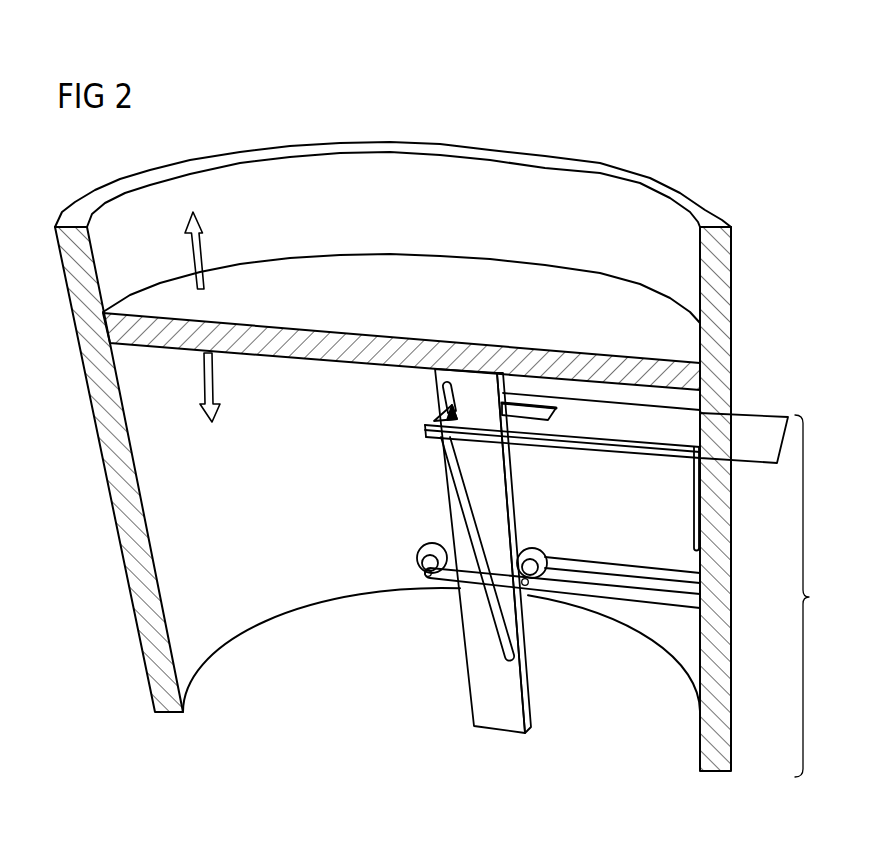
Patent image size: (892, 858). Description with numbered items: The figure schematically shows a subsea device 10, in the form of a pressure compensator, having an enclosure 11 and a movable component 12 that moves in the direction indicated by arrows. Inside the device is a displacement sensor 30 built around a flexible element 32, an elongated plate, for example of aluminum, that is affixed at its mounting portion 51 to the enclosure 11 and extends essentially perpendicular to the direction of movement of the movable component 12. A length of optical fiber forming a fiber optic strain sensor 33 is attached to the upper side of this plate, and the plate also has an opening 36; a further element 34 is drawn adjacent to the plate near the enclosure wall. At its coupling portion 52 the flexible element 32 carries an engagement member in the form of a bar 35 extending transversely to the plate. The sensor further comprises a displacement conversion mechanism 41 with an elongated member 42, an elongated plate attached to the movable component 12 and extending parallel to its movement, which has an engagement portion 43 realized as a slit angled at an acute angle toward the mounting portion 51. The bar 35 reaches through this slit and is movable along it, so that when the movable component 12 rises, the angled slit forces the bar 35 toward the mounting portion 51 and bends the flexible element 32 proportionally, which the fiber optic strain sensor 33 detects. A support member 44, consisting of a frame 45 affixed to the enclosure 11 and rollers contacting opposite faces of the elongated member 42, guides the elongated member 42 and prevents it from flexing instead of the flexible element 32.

The subsea device 10 is at (688, 144).
The enclosure 11 is at (122, 511).
The movable component 12 is at (299, 339).
The displacement sensor 30 is at (606, 549).
The flexible element 32 is at (652, 420).
The fiber optic strain sensor 33 is at (603, 453).
The guide pin 34 is at (693, 528).
The bar 35 is at (441, 395).
The opening 36 is at (521, 416).
The displacement conversion mechanism 41 is at (432, 733).
The elongated member 42 is at (466, 637).
The engagement portion 43 is at (512, 638).
The support member 44 is at (408, 530).
The frame 45 is at (621, 598).
The mounting portion 51 is at (718, 438).
The coupling portion 52 is at (435, 420).